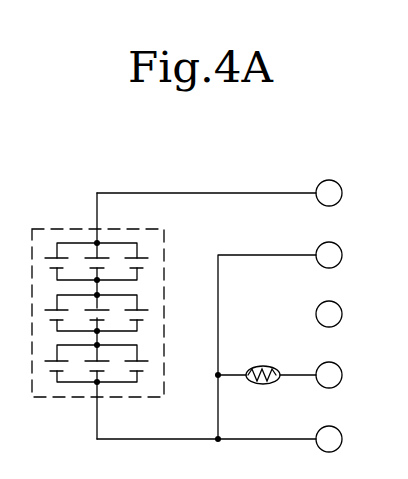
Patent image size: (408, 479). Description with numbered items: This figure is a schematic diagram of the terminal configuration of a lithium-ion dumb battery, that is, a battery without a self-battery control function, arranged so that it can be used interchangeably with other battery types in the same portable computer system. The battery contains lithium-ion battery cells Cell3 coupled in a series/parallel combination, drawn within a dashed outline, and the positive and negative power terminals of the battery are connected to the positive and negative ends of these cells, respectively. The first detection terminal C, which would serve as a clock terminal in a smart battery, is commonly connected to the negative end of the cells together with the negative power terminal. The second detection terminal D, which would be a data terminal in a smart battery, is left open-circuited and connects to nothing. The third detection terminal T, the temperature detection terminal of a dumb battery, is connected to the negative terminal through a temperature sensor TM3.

The Li-Ion battery cells Cell3 is at (164, 229).
The temperature sensor TM3 is at (265, 392).
The first detection terminal C is at (329, 255).
The second detection terminal D is at (329, 314).
The third detection terminal T is at (329, 375).